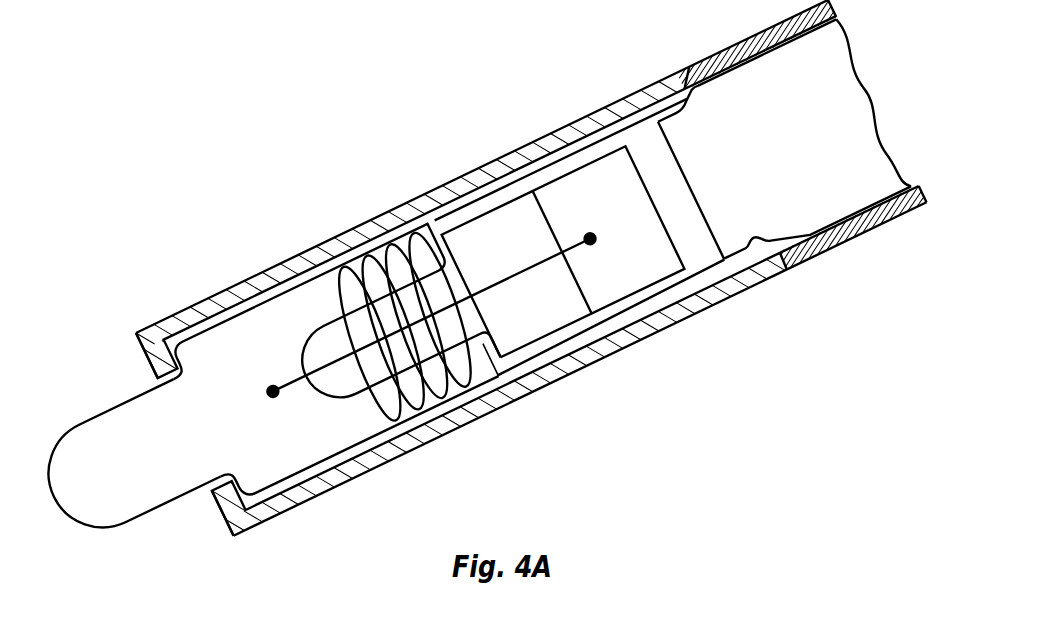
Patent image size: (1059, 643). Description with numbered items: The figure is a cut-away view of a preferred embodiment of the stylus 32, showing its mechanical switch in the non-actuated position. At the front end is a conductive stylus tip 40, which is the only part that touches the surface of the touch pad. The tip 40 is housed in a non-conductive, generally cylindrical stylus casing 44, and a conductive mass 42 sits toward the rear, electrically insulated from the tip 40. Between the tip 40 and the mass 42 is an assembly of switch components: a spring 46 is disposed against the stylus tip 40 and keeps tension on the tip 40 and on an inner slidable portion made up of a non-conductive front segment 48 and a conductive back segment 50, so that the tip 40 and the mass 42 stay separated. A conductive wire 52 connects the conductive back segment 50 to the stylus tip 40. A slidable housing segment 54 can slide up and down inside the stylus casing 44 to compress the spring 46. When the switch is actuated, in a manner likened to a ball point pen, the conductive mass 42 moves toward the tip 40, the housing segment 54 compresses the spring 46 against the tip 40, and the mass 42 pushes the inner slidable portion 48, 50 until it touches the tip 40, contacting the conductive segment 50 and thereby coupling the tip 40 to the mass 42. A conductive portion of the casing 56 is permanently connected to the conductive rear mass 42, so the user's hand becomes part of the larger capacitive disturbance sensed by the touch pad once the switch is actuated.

The stylus 32 is at (144, 254).
The conductive stylus tip 40 is at (113, 512).
The conductive mass 42 is at (840, 101).
The stylus casing 44 is at (388, 214).
The spring 46 is at (352, 268).
The non-conductive front segment 48 is at (552, 310).
The conductive back segment 50 is at (617, 280).
The conductive wire 52 is at (513, 280).
The slidable housing segment 54 is at (525, 170).
The conductive portion of the stylus casing 56 is at (716, 64).